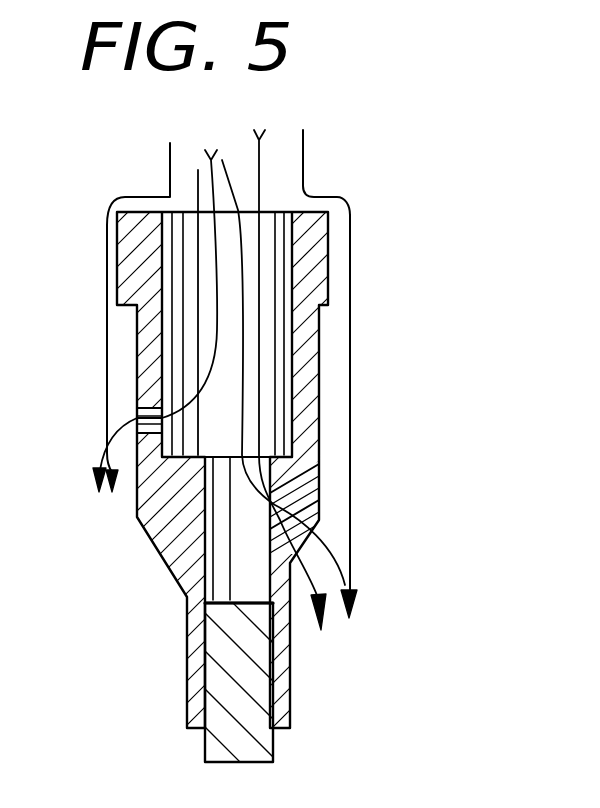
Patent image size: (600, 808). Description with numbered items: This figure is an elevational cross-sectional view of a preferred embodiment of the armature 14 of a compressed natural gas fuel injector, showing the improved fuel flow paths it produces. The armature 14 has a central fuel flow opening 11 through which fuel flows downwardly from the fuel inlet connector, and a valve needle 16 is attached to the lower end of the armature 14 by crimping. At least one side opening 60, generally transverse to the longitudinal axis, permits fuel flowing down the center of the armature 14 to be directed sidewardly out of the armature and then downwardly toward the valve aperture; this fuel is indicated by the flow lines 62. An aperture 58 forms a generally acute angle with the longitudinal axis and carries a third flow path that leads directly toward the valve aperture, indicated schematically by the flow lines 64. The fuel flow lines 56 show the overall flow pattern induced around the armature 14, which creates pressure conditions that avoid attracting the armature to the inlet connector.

The central fuel flow opening 11 is at (272, 258).
The armature 14 is at (319, 338).
The valve needle 16 is at (266, 742).
The fuel flow lines 56 is at (137, 197).
The aperture 58 is at (325, 458).
The side opening 60 is at (155, 395).
The flow lines 62 is at (350, 402).
The flow lines 64 is at (320, 545).